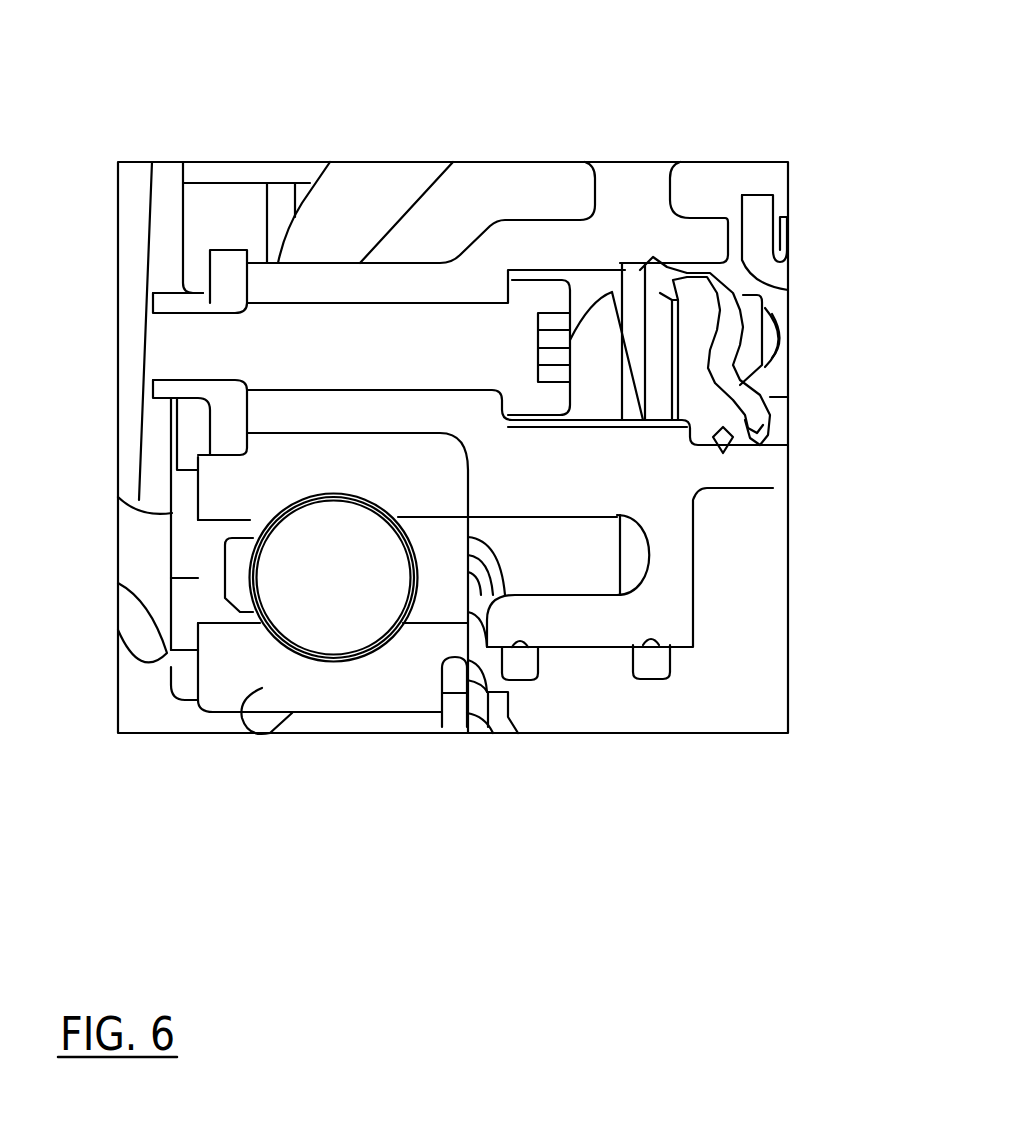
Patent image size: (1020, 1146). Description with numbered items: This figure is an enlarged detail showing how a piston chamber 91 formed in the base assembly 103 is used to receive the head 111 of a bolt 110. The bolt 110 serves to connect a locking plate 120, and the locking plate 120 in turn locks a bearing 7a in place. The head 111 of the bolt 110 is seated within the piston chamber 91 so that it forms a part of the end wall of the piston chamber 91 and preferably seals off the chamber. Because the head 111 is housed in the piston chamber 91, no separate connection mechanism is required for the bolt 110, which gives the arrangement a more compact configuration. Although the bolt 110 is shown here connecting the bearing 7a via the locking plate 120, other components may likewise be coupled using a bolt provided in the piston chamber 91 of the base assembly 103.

The bearing 7a is at (280, 677).
The piston chamber 91 is at (637, 402).
The base assembly 103 is at (636, 217).
The bolt 110 is at (427, 340).
The head of the bolt 111 is at (523, 405).
The locking plate 120 is at (228, 430).